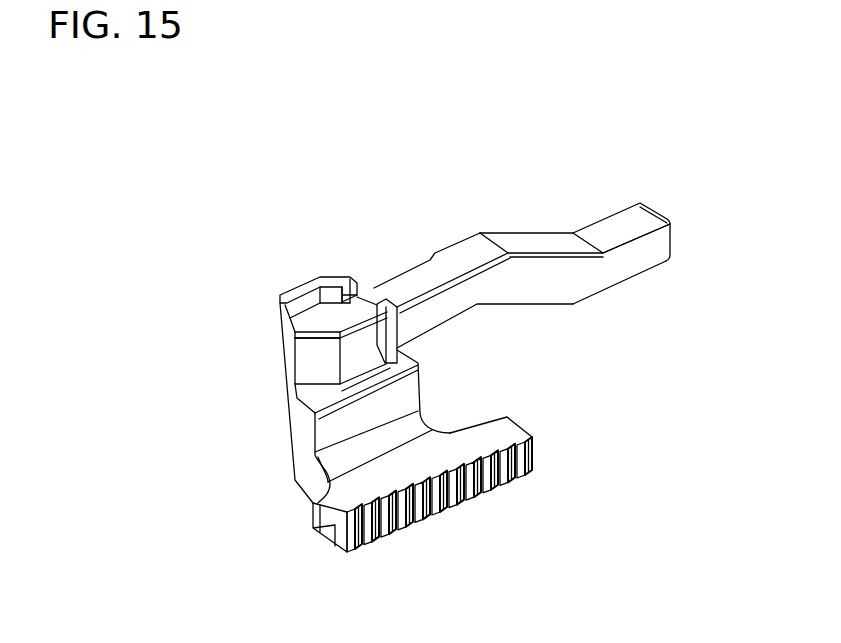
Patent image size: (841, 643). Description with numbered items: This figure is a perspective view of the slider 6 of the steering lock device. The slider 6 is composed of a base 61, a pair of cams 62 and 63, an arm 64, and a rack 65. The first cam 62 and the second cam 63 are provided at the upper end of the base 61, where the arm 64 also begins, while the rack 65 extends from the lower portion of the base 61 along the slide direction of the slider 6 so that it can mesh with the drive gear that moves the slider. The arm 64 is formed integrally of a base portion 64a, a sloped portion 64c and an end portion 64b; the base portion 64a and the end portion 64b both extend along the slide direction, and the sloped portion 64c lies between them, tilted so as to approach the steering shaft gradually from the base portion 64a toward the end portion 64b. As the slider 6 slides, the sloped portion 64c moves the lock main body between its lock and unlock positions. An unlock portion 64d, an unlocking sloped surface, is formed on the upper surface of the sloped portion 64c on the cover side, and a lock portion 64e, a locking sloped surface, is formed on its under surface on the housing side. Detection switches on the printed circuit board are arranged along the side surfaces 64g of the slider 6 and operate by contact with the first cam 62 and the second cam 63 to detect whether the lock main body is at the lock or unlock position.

The slider 6 is at (220, 200).
The base 61 is at (300, 462).
The first cam 62 is at (340, 363).
The second cam 63 is at (303, 283).
The arm 64 is at (634, 128).
The base portion 64a is at (453, 258).
The end portion 64b is at (618, 222).
The sloped portion 64c is at (543, 245).
The unlock portion 64d is at (598, 247).
The lock portion 64e is at (523, 305).
The side surfaces 64g is at (657, 247).
The rack 65 is at (503, 420).